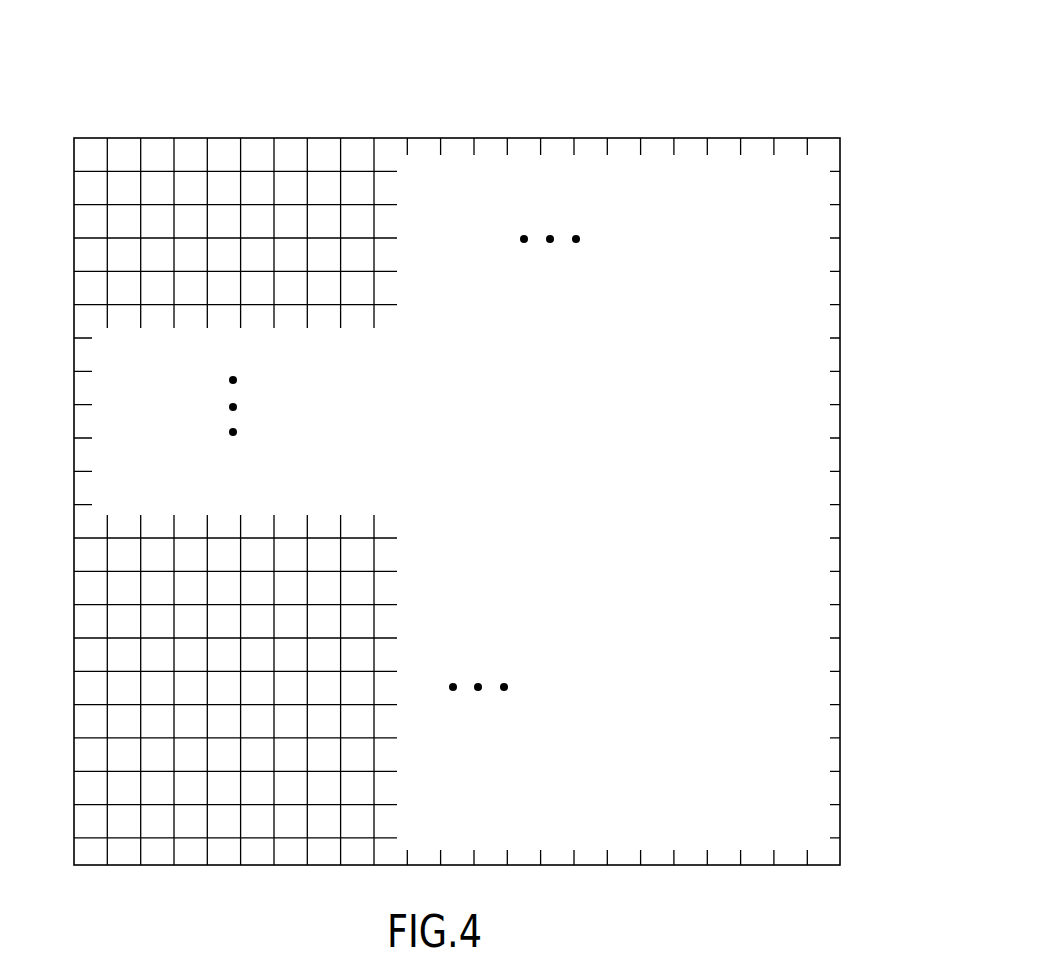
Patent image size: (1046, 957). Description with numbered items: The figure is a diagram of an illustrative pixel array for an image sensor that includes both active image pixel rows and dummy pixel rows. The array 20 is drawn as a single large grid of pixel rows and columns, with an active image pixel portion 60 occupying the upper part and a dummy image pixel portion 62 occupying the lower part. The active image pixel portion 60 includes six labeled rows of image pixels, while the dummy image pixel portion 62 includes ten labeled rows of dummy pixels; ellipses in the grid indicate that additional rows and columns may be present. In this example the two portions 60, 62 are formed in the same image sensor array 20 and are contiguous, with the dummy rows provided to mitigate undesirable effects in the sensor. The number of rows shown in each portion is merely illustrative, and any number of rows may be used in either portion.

The image sensor array 20 is at (464, 440).
The active image pixel portion 60 is at (852, 527).
The dummy image pixel portion 62 is at (852, 865).